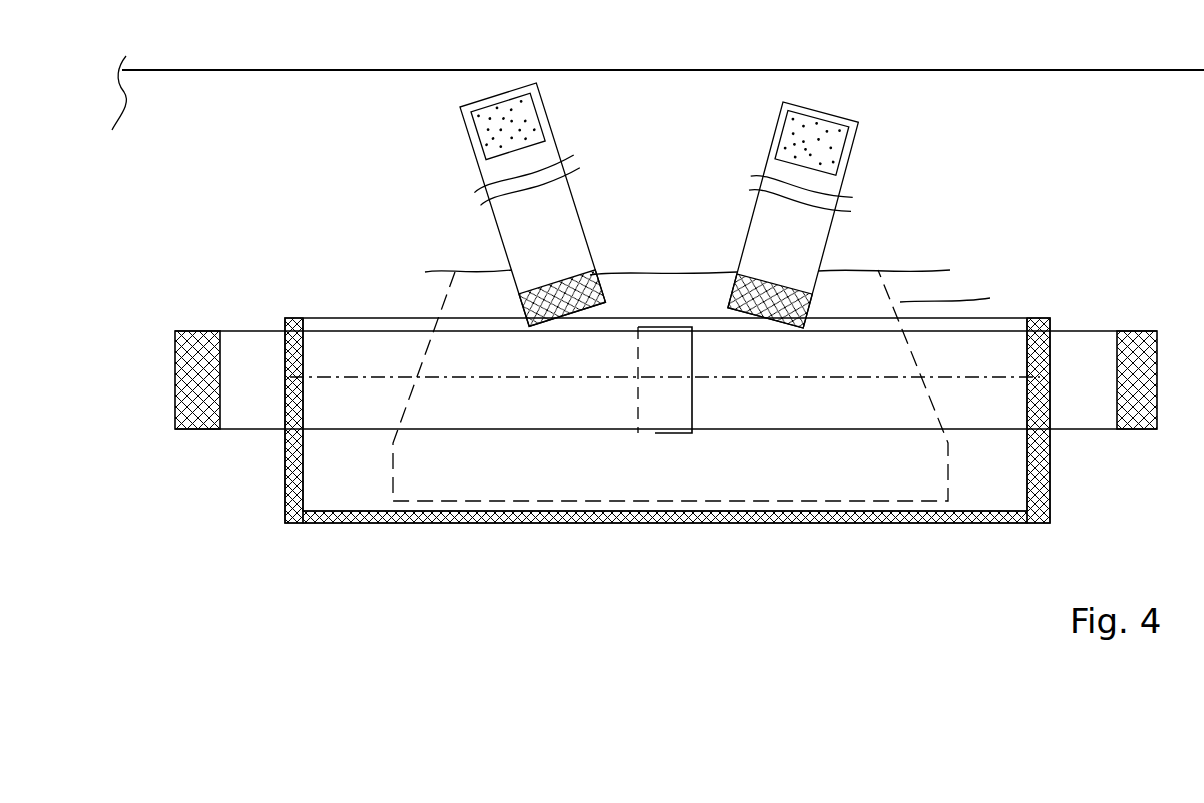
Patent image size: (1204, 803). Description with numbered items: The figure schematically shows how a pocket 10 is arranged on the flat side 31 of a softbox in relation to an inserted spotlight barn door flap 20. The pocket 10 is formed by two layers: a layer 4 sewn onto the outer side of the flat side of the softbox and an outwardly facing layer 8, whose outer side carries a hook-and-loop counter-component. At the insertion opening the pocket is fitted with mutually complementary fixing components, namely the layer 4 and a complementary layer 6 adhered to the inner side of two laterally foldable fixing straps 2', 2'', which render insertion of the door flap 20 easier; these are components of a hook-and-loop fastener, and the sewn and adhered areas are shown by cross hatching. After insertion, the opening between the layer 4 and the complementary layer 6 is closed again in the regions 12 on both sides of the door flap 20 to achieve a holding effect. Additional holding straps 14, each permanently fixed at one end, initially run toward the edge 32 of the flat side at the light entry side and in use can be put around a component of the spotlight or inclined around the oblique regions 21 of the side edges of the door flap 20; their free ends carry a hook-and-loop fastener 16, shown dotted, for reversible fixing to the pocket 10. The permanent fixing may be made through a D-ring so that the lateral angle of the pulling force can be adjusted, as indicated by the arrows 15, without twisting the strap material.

The fixing strap 2' is at (211, 348).
The fixing strap 2'' is at (1118, 343).
The layer 4 is at (404, 330).
The complementary layer 6 is at (455, 345).
The layer of the pocket facing outwards 8 is at (330, 400).
The pocket 10 is at (368, 540).
The regions 12 is at (375, 370).
The additional holding straps 14 is at (752, 230).
The arrows 15 is at (658, 205).
The hook-and-loop fastener 16 is at (780, 120).
The spotlight barn door flap 20 is at (880, 290).
The oblique regions 21 is at (990, 298).
The flat side of the softbox 31 is at (1102, 132).
The edge of the flat side of the softbox 32 is at (290, 72).